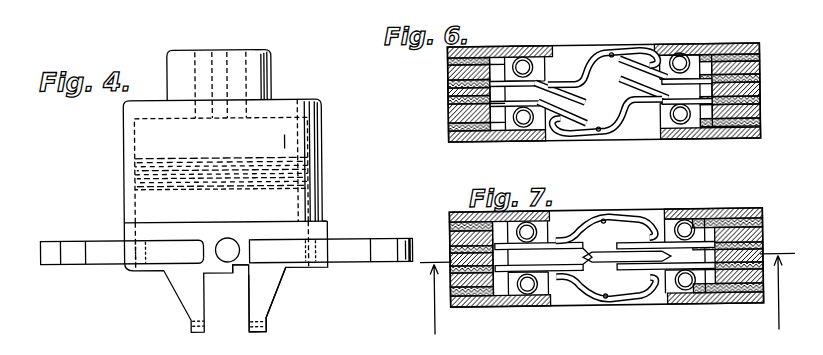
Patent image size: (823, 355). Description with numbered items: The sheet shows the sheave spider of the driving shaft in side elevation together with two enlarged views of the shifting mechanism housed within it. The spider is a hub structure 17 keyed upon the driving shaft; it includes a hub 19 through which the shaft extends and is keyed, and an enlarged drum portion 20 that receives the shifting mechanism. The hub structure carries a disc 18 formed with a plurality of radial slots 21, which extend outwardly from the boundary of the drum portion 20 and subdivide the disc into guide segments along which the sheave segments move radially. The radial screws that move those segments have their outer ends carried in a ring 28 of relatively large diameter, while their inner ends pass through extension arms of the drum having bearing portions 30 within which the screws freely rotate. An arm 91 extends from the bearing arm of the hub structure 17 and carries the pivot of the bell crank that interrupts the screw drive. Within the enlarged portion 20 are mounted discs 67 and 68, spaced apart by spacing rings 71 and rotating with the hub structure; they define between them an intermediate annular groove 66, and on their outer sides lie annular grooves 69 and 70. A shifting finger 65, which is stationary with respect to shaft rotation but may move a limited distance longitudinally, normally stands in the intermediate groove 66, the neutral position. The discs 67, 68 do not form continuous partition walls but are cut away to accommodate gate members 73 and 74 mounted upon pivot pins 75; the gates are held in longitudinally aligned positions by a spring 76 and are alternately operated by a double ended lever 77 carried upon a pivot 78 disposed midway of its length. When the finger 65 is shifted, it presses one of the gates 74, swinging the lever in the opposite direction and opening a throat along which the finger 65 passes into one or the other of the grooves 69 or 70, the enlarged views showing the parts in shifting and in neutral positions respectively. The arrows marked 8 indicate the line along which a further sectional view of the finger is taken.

In FIG. 4, the hub structure 17 is at (328, 139).
In FIG. 4, the disc 18 is at (335, 238).
In FIG. 4, the hub 19 is at (275, 85).
In FIG. 4, the enlarged drum portion 20 is at (325, 169).
In FIG. 4, the radial slots 21 is at (208, 259).
In FIG. 4, the ring 28 is at (221, 238).
In FIG. 4, the bearing portions 30 is at (243, 269).
In FIG. 4, the arm 91 is at (266, 301).
In FIG. 6, the shifting finger 65 is at (604, 100).
In FIG. 6, the intermediate annular groove 66 is at (505, 92).
In FIG. 6, the disc 67 is at (448, 82).
In FIG. 6, the disc 68 is at (448, 107).
In FIG. 6, the annular groove 69 is at (506, 56).
In FIG. 6, the annular groove 70 is at (505, 113).
In FIG. 6, the spacing rings 71 is at (466, 72).
In FIG. 6, the gate member 73 is at (553, 78).
In FIG. 7, the gate member 73 is at (547, 243).
In FIG. 6, the gate member 74 is at (676, 43).
In FIG. 6, the pivot pins 75 is at (687, 92).
In FIG. 7, the pivot pins 75 is at (557, 274).
In FIG. 6, the spring 76 is at (716, 44).
In FIG. 7, the spring 76 is at (693, 213).
In FIG. 6, the double ended lever 77 is at (627, 57).
In FIG. 7, the double ended lever 77 is at (623, 223).
In FIG. 6, the pivot 78 is at (605, 50).
In FIG. 7, the pivot 78 is at (603, 302).
In FIG. 7, the section line 8 is at (608, 298).